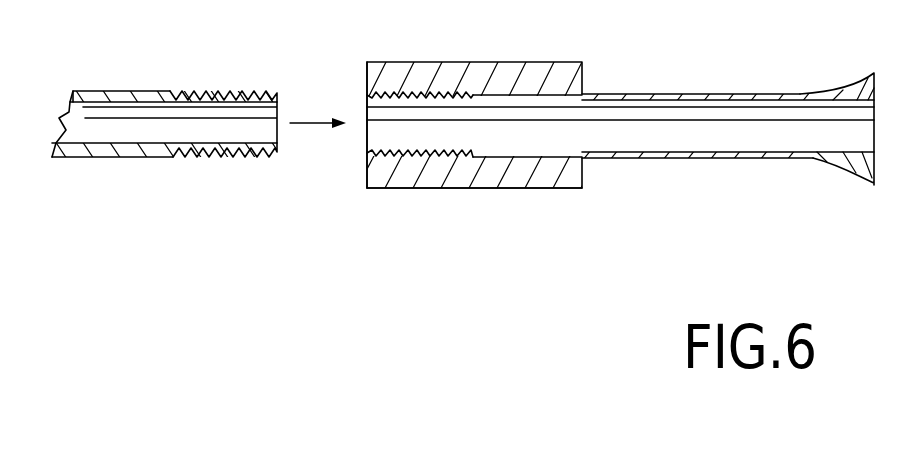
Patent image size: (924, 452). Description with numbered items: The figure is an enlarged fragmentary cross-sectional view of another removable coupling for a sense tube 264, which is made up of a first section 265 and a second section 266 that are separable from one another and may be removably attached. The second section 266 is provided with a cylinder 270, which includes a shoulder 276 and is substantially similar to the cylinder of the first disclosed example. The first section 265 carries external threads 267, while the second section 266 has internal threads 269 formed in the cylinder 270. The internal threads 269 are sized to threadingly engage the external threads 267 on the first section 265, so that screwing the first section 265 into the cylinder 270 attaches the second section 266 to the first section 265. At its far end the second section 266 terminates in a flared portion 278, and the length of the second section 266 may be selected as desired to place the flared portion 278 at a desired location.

The sense tube 264 is at (452, 220).
The first section 265 is at (112, 91).
The second section 266 is at (638, 95).
The external threads 267 is at (227, 91).
The internal threads 269 is at (411, 150).
The cylinder 270 is at (497, 62).
The shoulder 276 is at (358, 78).
The flared portion 278 is at (874, 185).